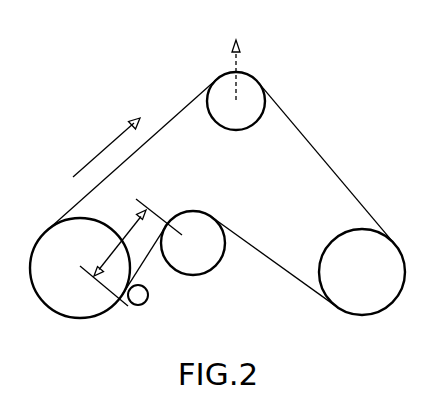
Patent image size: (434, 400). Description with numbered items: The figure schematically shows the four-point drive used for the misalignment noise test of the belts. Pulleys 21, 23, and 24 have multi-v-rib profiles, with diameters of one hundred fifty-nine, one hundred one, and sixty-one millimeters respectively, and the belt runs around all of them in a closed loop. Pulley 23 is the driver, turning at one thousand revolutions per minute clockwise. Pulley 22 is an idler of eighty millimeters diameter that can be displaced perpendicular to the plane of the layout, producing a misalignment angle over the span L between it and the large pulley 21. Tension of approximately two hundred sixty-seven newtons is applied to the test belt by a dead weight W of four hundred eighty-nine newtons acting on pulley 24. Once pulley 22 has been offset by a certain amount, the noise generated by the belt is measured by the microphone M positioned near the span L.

The pulley 21 is at (44, 268).
The idler pulley 22 is at (178, 264).
The driver pulley 23 is at (345, 282).
The pulley 24 is at (223, 118).
The dead weight W is at (236, 55).
The span L is at (131, 252).
The microphone M is at (145, 311).